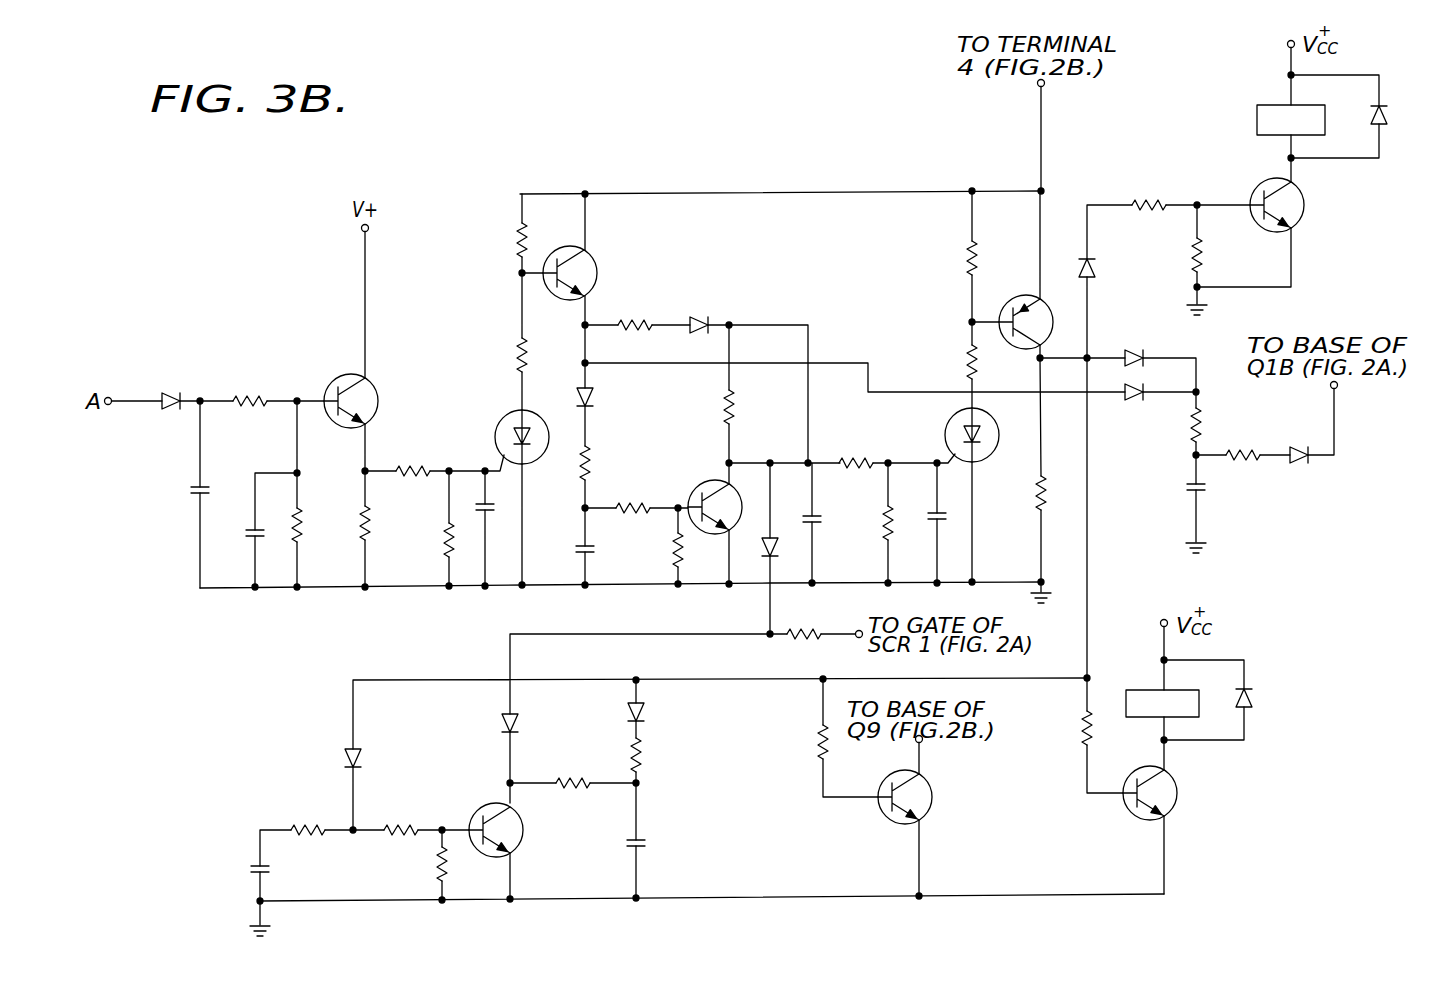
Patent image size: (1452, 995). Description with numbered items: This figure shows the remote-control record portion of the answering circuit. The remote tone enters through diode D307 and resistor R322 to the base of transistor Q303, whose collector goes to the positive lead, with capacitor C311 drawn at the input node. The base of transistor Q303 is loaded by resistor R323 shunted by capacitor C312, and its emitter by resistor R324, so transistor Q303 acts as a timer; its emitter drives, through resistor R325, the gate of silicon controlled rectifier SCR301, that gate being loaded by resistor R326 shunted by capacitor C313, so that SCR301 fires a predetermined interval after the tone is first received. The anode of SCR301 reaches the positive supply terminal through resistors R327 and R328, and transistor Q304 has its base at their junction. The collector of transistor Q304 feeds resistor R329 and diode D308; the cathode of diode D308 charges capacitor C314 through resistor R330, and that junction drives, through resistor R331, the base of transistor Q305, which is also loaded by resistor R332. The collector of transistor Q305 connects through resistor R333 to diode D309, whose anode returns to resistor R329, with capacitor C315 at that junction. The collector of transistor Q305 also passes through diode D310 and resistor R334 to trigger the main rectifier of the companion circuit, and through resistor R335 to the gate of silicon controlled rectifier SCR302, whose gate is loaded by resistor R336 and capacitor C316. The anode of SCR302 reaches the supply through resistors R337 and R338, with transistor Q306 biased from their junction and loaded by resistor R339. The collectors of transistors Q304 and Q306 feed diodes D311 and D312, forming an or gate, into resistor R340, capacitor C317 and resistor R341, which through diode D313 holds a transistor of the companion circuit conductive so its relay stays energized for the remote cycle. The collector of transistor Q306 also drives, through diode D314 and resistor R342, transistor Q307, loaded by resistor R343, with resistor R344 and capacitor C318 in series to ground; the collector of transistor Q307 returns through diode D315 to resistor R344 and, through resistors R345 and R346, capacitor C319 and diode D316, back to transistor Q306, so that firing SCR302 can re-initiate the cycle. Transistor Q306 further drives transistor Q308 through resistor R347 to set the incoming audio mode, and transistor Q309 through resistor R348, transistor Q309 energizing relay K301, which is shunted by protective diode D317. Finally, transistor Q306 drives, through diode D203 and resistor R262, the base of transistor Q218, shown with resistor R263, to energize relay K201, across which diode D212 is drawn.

The diode D307 is at (170, 394).
The resistor R322 is at (246, 395).
The transistor Q303 is at (371, 382).
The capacitor C311 is at (191, 490).
The capacitor C312 is at (249, 537).
The resistor R323 is at (305, 527).
The resistor R325 is at (400, 468).
The resistor R324 is at (372, 525).
The resistor R326 is at (453, 541).
The capacitor C313 is at (490, 500).
The resistor R328 is at (515, 243).
The resistor R327 is at (516, 352).
The transistor Q304 is at (592, 257).
The silicon controlled rectifier SCR301 is at (506, 420).
The resistor R329 is at (632, 331).
The diode D309 is at (696, 318).
The diode D308 is at (595, 398).
The resistor R333 is at (760, 397).
The resistor R330 is at (593, 456).
The NPN transistor Q305 is at (697, 486).
The resistor R331 is at (635, 494).
The capacitor C314 is at (580, 550).
The resistor R332 is at (673, 545).
The diode D310 is at (770, 570).
The resistor R334 is at (805, 641).
The resistor R335 is at (860, 447).
The capacitor C315 is at (822, 525).
The resistor R336 is at (880, 520).
The capacitor C316 is at (932, 525).
The resistor R339 is at (1038, 495).
The resistor R338 is at (965, 255).
The resistor R337 is at (965, 365).
The transistor Q306 is at (1018, 300).
The silicon controlled rectifier SCR302 is at (948, 425).
The diode D203 is at (1094, 263).
The diode D311 is at (1135, 338).
The diode D312 is at (1135, 402).
The resistor R262 is at (1150, 188).
The resistor R263 is at (1230, 255).
The transistor Q218 is at (1306, 205).
The relay K201 is at (1291, 120).
The diode D212 is at (1389, 115).
The resistor R340 is at (1205, 423).
The resistor R341 is at (1245, 460).
The diode D313 is at (1298, 462).
The capacitor C317 is at (1187, 488).
The capacitor C318 is at (250, 870).
The resistor R344 is at (305, 826).
The resistor R342 is at (403, 826).
The resistor R343 is at (437, 862).
The diode D314 is at (362, 758).
The diode D315 is at (520, 723).
The resistor R345 is at (598, 773).
The NPN transistor Q307 is at (525, 818).
The diode D316 is at (645, 712).
The resistor R346 is at (645, 752).
The capacitor C319 is at (645, 842).
The resistor R347 is at (822, 745).
The NPN transistor Q308 is at (930, 803).
The resistor R348 is at (1083, 735).
The transistor Q309 is at (1177, 795).
The relay K301 is at (1162, 703).
The diode D317 is at (1252, 698).